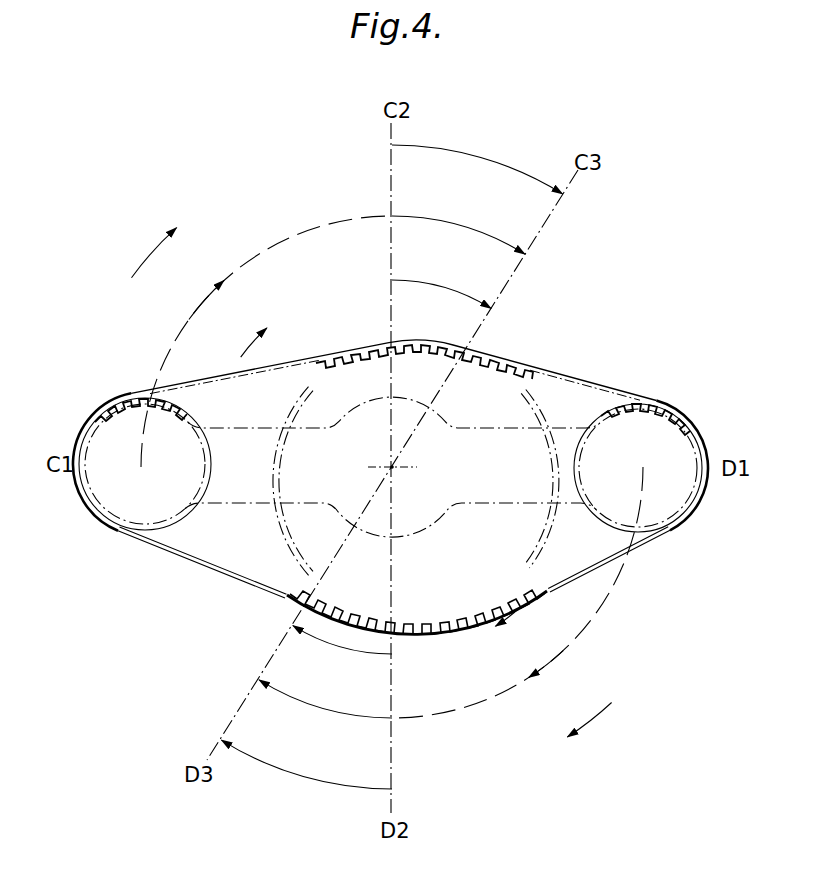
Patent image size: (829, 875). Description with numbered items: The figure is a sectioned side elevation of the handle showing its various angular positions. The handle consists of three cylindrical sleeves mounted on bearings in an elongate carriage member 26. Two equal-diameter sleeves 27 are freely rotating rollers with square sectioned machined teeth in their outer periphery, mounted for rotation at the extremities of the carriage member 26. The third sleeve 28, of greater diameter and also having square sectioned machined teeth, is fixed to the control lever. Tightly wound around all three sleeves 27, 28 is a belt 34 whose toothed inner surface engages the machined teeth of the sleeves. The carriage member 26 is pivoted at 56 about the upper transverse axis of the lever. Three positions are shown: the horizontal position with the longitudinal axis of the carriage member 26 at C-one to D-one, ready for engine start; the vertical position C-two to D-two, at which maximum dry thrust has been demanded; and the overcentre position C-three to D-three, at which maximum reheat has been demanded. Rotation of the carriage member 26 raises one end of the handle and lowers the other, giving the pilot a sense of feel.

The carriage member 26 is at (247, 503).
The sleeves 27 is at (122, 414).
The third sleeve 28 is at (447, 607).
The belt 34 is at (510, 367).
The pivot 56 is at (392, 467).